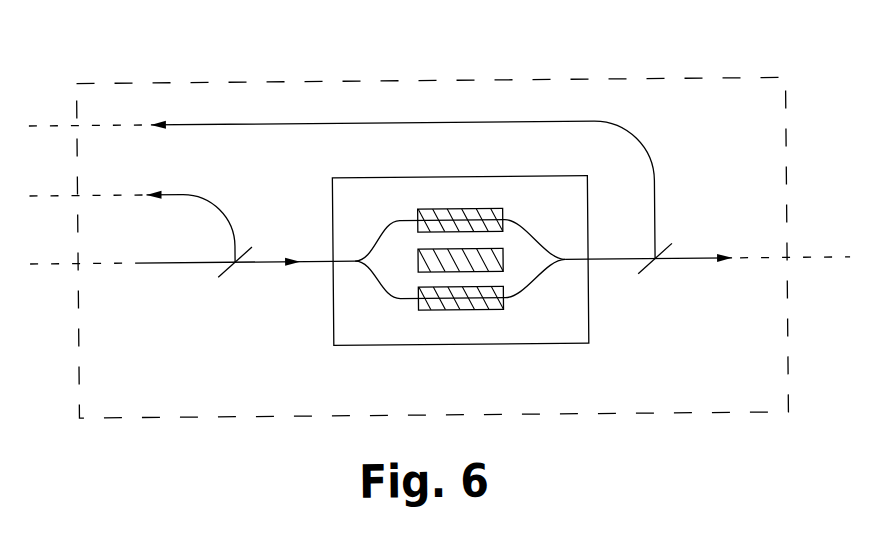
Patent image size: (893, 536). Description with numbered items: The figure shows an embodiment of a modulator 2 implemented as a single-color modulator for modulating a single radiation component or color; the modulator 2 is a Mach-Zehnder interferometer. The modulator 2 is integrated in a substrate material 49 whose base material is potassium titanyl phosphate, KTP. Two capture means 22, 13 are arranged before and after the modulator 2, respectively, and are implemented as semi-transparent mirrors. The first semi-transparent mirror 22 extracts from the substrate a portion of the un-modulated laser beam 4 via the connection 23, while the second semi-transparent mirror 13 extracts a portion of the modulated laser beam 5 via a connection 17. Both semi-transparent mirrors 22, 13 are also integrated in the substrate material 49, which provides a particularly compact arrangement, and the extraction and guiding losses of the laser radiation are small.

The substrate material 49 is at (684, 90).
The connection 17 is at (285, 126).
The connection 23 is at (185, 190).
The un-modulated laser beam 4 is at (168, 265).
The capture means 22 is at (227, 275).
The modulator 2 is at (443, 338).
The modulated laser beam 5 is at (688, 257).
The capture means 13 is at (645, 277).